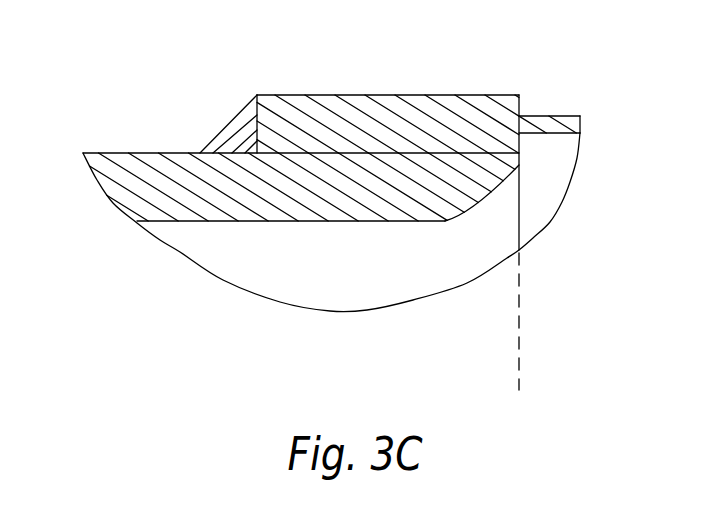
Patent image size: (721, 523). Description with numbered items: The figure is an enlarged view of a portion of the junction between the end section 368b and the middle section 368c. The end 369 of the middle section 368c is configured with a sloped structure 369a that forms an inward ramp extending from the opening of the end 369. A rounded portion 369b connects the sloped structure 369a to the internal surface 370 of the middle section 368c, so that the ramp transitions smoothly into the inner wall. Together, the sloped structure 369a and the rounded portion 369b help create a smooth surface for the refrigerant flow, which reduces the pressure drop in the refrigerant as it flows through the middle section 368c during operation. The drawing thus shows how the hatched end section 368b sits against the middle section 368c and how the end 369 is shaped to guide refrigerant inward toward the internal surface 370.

The end section 368b is at (489, 122).
The middle section 368c is at (192, 186).
The end of the middle section 369 is at (520, 186).
The sloped structure 369a is at (488, 195).
The rounded portion 369b is at (475, 206).
The internal surface 370 is at (262, 222).